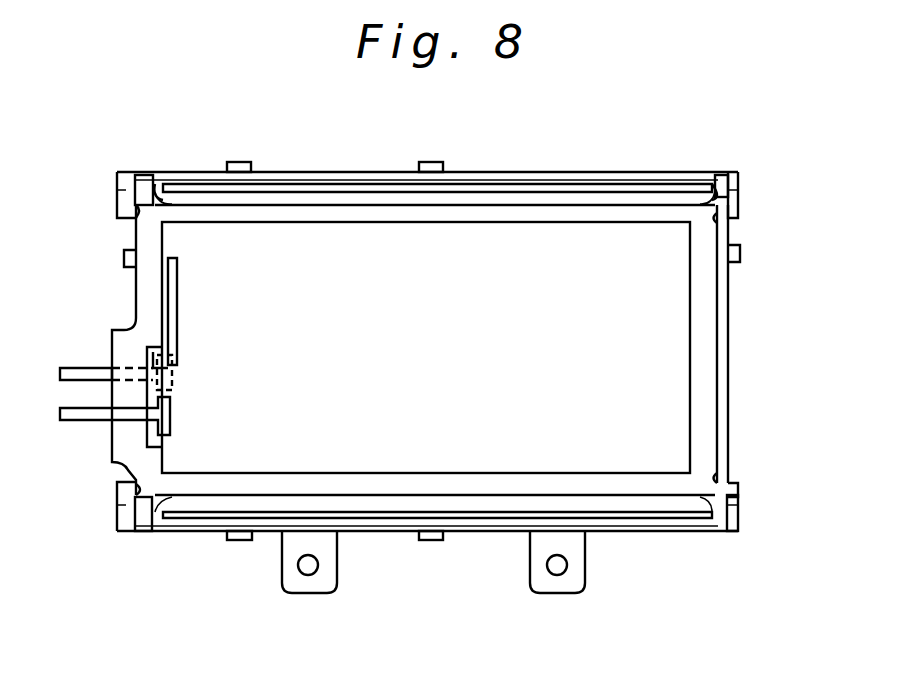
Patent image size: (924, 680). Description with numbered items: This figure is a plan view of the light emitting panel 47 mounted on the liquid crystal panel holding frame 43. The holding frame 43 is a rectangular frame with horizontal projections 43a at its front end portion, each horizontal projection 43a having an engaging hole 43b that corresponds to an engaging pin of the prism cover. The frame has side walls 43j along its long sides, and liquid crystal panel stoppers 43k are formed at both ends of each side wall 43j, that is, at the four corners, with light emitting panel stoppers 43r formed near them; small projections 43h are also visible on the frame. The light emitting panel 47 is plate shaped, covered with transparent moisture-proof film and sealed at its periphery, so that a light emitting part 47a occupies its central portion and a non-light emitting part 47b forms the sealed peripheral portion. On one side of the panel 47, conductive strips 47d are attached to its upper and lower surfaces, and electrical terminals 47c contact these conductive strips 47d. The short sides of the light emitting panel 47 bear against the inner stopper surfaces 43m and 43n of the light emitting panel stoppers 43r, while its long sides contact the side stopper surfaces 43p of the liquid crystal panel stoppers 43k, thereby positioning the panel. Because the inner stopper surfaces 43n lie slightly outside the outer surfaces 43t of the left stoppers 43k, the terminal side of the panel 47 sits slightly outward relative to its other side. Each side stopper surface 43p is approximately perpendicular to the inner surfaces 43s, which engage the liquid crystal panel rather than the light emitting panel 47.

The liquid crystal panel holding frame 43 is at (185, 540).
The horizontal projections 43a is at (300, 586).
The engaging hole 43b is at (312, 568).
The projection 43h is at (240, 164).
The side walls 43j is at (505, 180).
The liquid crystal panel stoppers 43k is at (143, 176).
The inner stopper surfaces 43m is at (729, 238).
The inner stopper surfaces 43n is at (131, 214).
The side stopper surfaces 43p is at (166, 192).
The light emitting panel stoppers 43r is at (123, 188).
The inner surfaces 43s is at (158, 194).
The outer surfaces 43t is at (118, 173).
The light emitting panel 47 is at (352, 198).
The light emitting part 47a is at (652, 326).
The non-light emitting part 47b is at (706, 352).
The electrical terminals 47c is at (72, 367).
The conductive strips 47d is at (168, 262).